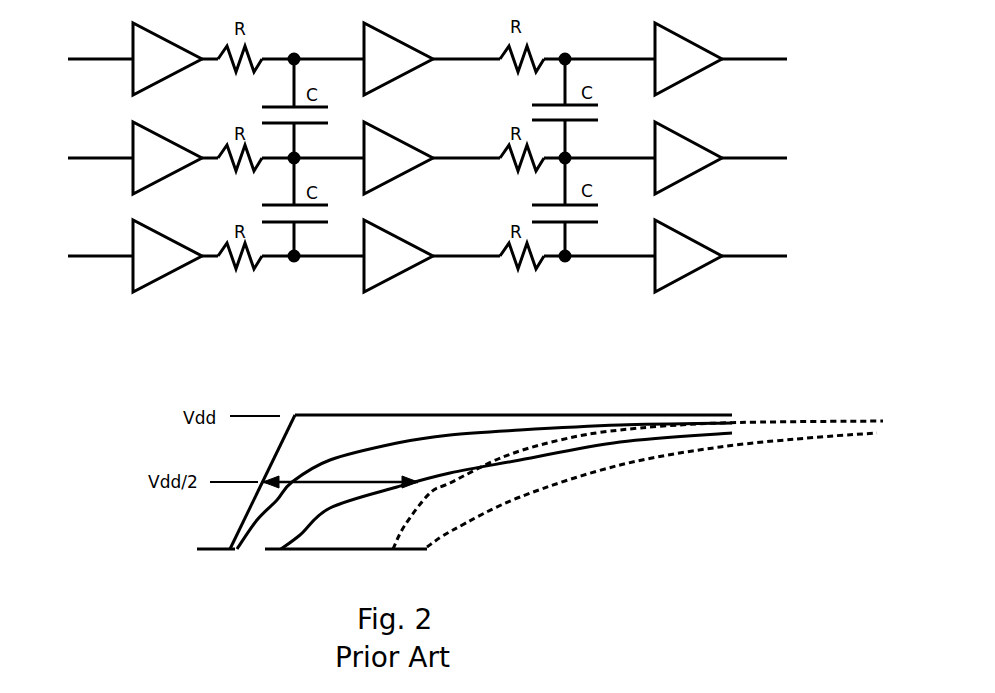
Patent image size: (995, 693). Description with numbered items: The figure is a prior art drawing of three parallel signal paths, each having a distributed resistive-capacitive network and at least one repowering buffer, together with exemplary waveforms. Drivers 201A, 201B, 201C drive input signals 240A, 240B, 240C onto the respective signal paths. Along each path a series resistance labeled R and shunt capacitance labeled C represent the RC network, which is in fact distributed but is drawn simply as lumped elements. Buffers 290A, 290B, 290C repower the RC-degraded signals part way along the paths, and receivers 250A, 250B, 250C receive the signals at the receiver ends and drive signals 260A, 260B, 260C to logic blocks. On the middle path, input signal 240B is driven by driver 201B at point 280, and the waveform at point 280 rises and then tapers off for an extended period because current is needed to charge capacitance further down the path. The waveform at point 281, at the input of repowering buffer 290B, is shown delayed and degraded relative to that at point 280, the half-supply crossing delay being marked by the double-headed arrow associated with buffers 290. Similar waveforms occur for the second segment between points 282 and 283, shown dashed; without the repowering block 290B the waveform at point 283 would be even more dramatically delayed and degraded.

The input signal 240A is at (104, 57).
The input signal 240B is at (104, 156).
The input signal 240C is at (104, 254).
The driver 201A is at (167, 59).
The driver 201B is at (167, 158).
The driver 201C is at (167, 256).
The repowering buffer 290A is at (398, 59).
The repowering buffer 290B is at (398, 158).
The repowering buffer 290C is at (398, 256).
The receiver 250A is at (688, 59).
The receiver 250B is at (688, 158).
The receiver 250C is at (688, 256).
The signal 260A is at (745, 58).
The signal 260B is at (745, 157).
The signal 260C is at (745, 255).
The point 280 is at (208, 157).
The point 281 is at (305, 157).
The point 282 is at (438, 157).
The point 283 is at (587, 157).
The buffers 290 is at (360, 482).